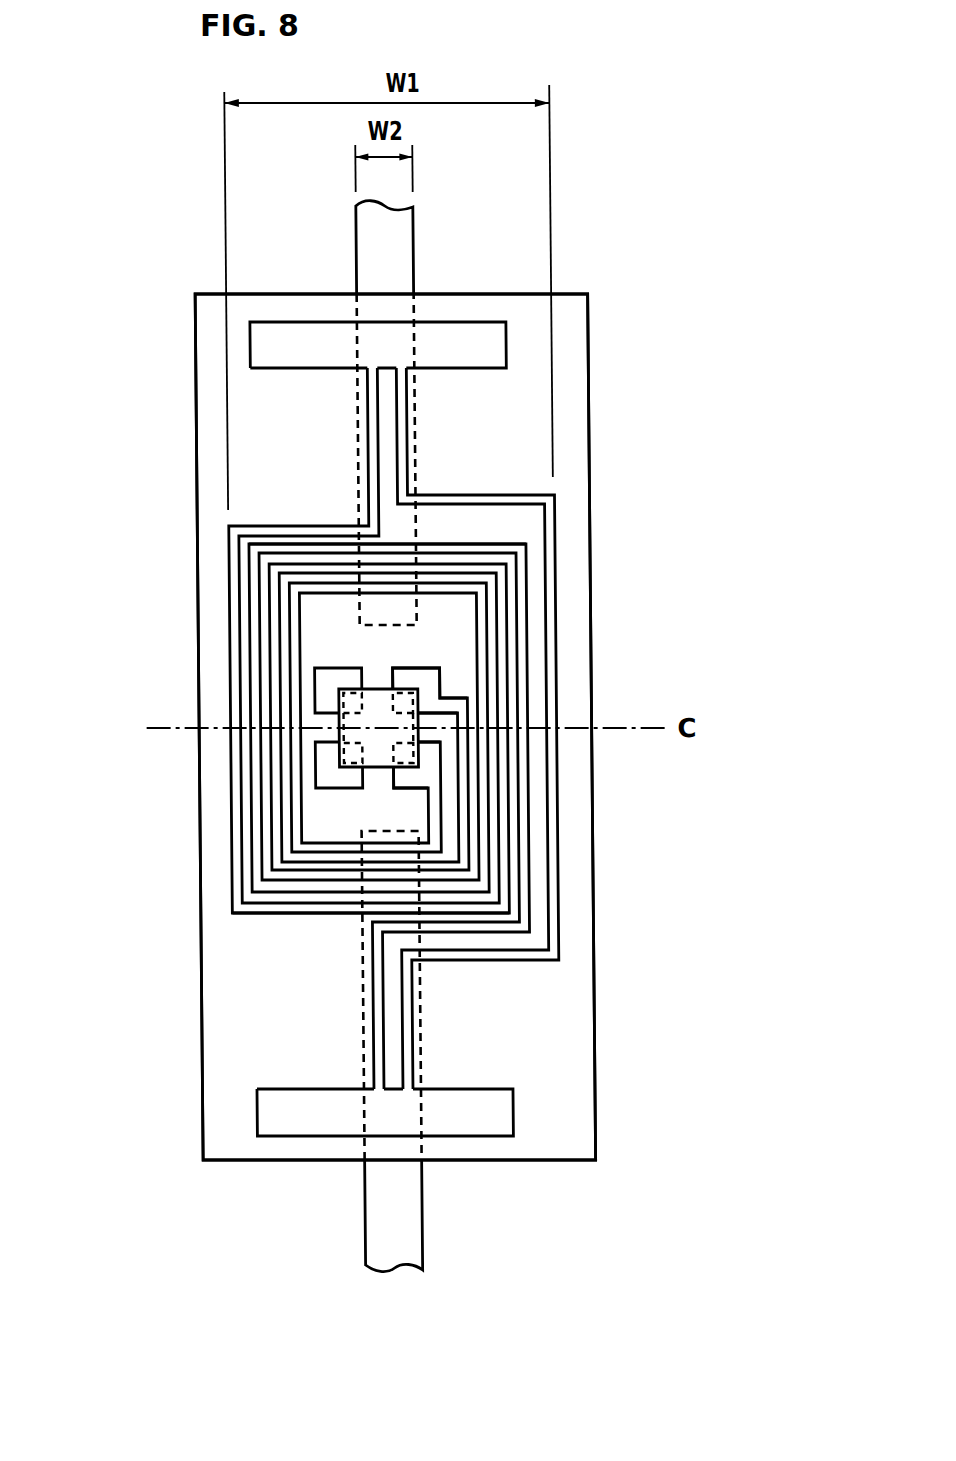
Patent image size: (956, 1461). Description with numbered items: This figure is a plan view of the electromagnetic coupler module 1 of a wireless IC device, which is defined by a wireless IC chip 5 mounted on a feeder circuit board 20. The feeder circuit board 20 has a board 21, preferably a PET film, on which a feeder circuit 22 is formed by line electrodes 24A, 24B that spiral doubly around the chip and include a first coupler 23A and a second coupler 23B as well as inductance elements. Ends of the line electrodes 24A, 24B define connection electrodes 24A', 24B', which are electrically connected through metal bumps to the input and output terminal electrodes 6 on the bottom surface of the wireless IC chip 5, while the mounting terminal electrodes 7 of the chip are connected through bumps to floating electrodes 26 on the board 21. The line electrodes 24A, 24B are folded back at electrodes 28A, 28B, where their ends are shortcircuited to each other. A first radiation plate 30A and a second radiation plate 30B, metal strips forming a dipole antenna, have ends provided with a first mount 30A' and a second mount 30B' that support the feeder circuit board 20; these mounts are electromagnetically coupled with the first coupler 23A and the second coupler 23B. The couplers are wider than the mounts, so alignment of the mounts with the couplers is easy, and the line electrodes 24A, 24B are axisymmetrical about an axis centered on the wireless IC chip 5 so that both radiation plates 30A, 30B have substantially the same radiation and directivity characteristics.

The electromagnetic coupler module 1 is at (622, 254).
The wireless IC chip 5 is at (371, 688).
The input and output terminal electrodes 6 is at (401, 692).
The mounting terminal electrodes 7 is at (354, 692).
The feeder circuit board 20 is at (592, 924).
The board 21 is at (198, 373).
The feeder circuit 22 is at (562, 614).
The first coupler 23A is at (468, 541).
The second coupler 23B is at (275, 914).
The line electrode 24A is at (323, 816).
The line electrode 24B is at (311, 640).
The connection electrode 24A' is at (539, 766).
The connection electrode 24B' is at (537, 679).
The floating electrodes 26 is at (314, 683).
The electrode 28A is at (448, 363).
The electrode 28B is at (457, 1095).
The first radiation plate 30A is at (436, 247).
The second radiation plate 30B is at (452, 1216).
The first mount 30A' is at (328, 459).
The second mount 30B' is at (331, 995).